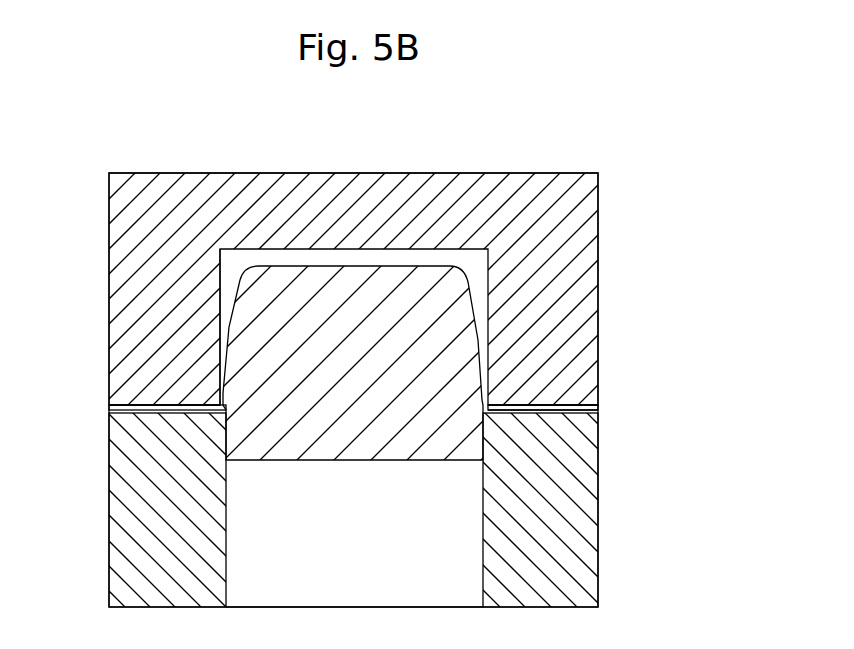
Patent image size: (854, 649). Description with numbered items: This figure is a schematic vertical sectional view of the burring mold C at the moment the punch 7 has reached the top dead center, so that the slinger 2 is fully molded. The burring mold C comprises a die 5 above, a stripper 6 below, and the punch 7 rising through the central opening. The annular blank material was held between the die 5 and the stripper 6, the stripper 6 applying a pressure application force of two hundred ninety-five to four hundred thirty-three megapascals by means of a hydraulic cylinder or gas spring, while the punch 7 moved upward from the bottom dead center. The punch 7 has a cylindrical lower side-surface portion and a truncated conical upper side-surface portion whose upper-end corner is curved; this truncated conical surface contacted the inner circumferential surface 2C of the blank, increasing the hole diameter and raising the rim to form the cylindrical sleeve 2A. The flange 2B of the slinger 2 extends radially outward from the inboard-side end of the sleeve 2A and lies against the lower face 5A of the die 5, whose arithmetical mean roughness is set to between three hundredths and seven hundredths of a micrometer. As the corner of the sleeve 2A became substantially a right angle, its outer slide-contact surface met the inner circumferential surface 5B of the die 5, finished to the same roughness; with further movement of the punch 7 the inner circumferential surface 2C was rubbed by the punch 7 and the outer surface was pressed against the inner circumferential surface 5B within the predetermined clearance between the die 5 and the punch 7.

The burring mold C is at (618, 188).
The die 5 is at (598, 263).
The lower face of the die 5A is at (200, 405).
The inner circumferential surface of the die 5B is at (222, 399).
The slinger 2 is at (690, 340).
The sleeve 2A is at (488, 390).
The flange 2B is at (500, 411).
The inner circumferential surface of the sleeve 2C is at (484, 385).
The stripper 6 is at (598, 532).
The punch 7 is at (325, 450).